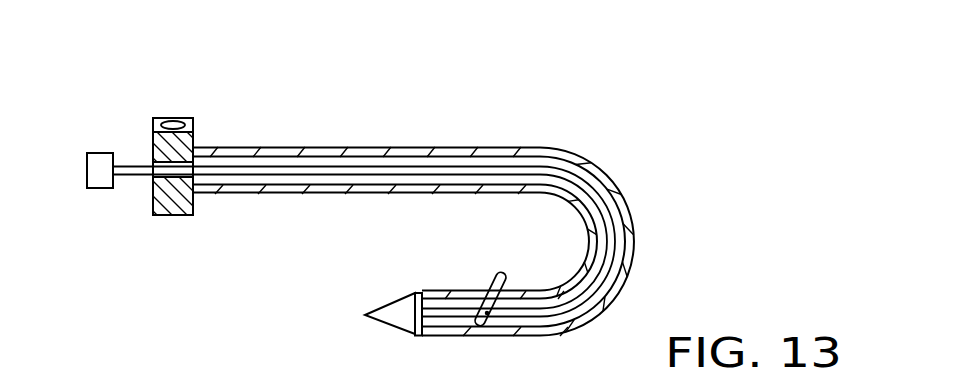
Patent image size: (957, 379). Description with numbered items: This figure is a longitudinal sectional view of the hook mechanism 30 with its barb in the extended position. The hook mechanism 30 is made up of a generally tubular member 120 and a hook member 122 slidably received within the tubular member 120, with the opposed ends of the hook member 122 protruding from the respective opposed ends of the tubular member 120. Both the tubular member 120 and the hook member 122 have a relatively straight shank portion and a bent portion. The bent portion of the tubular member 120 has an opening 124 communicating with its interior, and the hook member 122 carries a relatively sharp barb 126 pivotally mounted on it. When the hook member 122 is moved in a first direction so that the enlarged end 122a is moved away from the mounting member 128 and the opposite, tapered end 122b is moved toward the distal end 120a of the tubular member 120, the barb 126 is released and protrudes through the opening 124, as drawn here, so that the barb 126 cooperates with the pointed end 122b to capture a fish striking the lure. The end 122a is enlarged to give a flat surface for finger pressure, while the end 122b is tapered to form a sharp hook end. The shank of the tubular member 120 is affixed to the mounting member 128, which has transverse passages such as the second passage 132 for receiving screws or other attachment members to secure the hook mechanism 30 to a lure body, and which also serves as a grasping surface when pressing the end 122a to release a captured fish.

The hook mechanism 30 is at (333, 95).
The tubular member 120 is at (550, 147).
The distal end of tubular member 120a is at (417, 337).
The hook member 122 is at (378, 170).
The end of hook member 122a is at (87, 170).
The pointed end of hook member 122b is at (390, 306).
The opening 124 is at (483, 292).
The barb 126 is at (503, 285).
The mounting member 128 is at (177, 205).
The second passage 132 is at (175, 121).